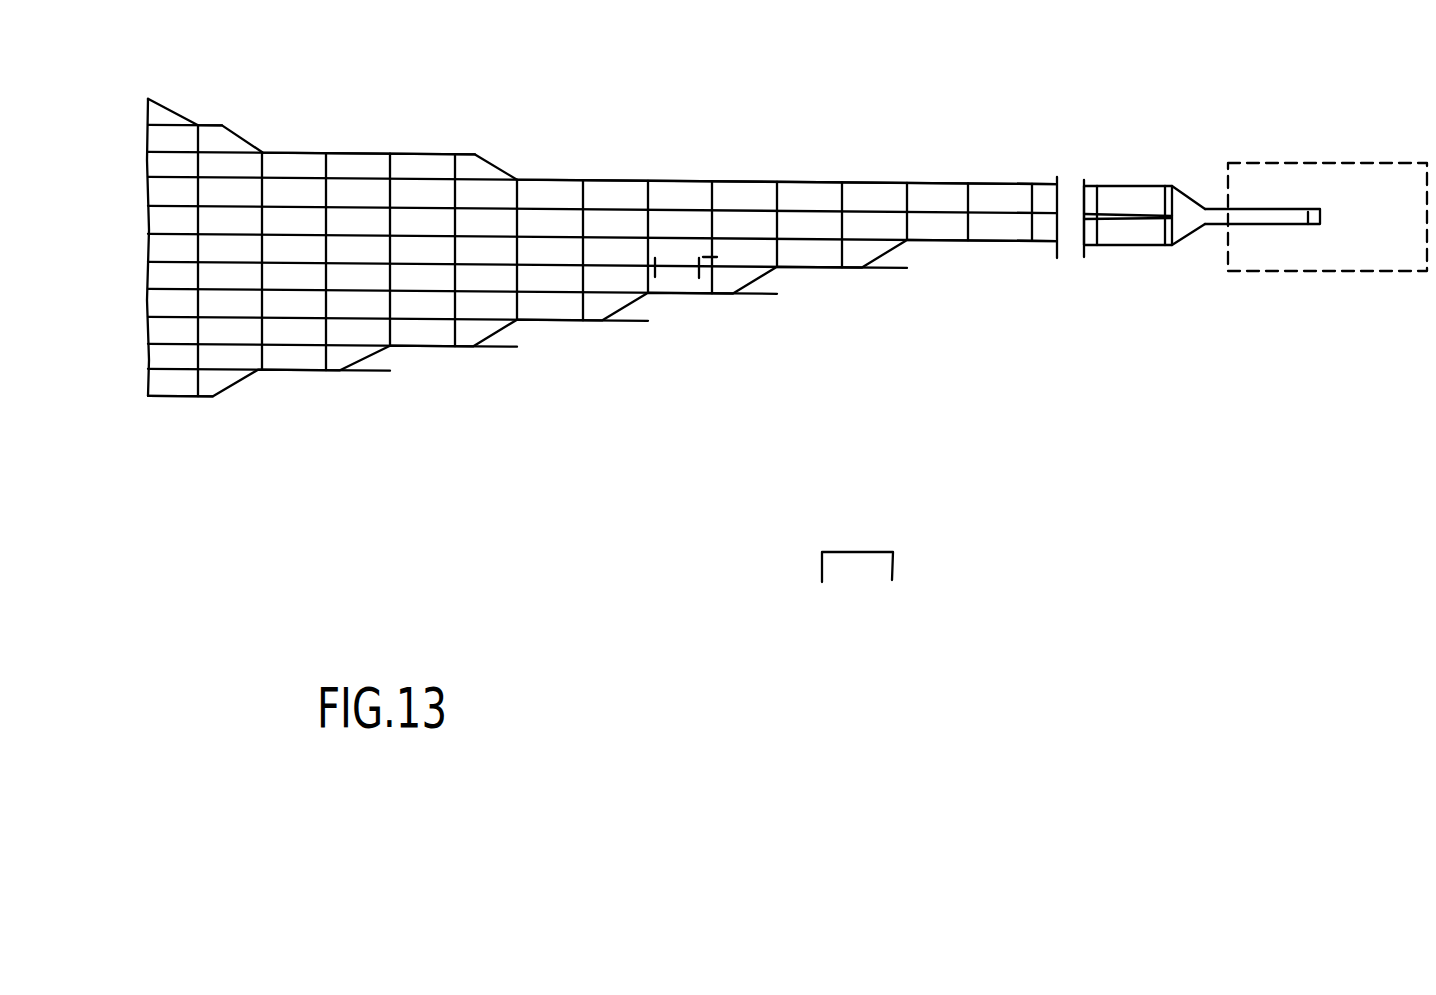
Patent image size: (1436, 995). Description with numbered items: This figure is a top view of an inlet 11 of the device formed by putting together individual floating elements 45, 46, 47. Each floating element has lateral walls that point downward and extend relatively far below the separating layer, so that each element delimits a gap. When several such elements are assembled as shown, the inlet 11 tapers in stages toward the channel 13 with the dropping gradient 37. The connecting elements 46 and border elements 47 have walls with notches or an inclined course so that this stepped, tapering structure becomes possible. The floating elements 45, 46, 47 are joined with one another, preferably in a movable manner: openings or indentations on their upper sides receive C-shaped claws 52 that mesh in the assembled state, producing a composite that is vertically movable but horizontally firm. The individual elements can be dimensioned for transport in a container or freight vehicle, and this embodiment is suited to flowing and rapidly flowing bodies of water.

The inlet 11 is at (743, 80).
The channel 13 is at (1261, 215).
The dropping gradient 37 is at (1312, 224).
The floating element 45 is at (506, 277).
The connecting element 46 is at (223, 358).
The border element 47 is at (347, 355).
The C-shaped claw 52 is at (709, 275).